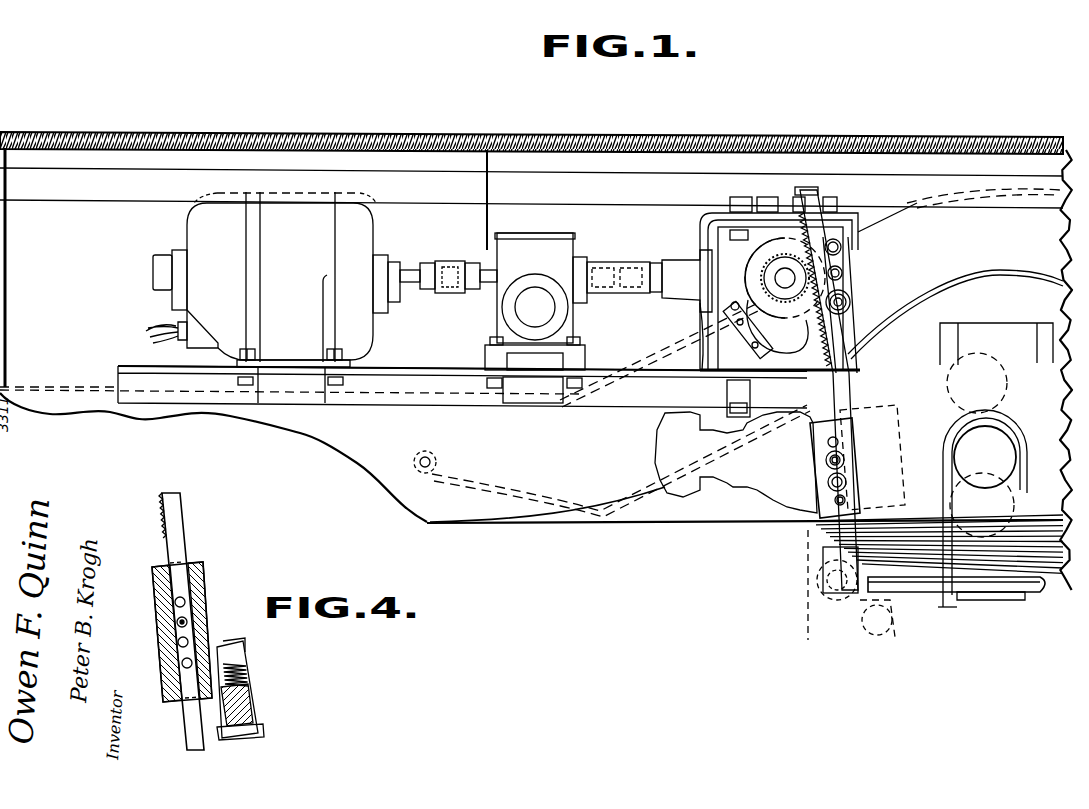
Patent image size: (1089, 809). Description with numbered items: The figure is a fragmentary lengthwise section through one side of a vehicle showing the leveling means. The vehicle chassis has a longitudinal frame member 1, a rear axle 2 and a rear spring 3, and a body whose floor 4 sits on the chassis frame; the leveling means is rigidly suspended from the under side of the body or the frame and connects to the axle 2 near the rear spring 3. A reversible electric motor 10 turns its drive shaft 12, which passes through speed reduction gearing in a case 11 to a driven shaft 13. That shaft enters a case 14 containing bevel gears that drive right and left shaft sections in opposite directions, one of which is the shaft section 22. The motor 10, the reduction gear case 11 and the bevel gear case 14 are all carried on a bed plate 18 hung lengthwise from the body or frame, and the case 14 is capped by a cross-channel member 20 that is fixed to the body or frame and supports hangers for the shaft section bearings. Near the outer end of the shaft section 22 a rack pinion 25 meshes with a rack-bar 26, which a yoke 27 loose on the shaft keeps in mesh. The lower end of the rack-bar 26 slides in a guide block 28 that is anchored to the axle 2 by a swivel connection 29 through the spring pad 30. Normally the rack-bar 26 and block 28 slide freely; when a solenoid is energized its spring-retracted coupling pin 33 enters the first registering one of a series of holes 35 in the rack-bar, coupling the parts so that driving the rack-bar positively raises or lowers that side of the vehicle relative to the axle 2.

In FIG. 1, the longitudinal frame member 1 is at (542, 524).
In FIG. 1, the rear axle 2 is at (1000, 443).
In FIG. 1, the rear spring 3 is at (1027, 593).
In FIG. 1, the floor 4 is at (670, 134).
In FIG. 1, the electric motor 10 is at (273, 297).
In FIG. 1, the case 11 is at (536, 318).
In FIG. 1, the drive shaft 12 is at (427, 240).
In FIG. 1, the driven shaft 13 is at (597, 270).
In FIG. 1, the case 14 is at (715, 283).
In FIG. 1, the bed plate 18 is at (418, 376).
In FIG. 1, the cross-channel member 20 is at (845, 210).
In FIG. 1, the driven shaft section 22 is at (772, 277).
In FIG. 1, the rack pinion 25 is at (766, 262).
In FIG. 1, the rack-bar 26 is at (852, 309).
In FIG. 4, the rack-bar 26 is at (177, 549).
In FIG. 1, the yoke 27 is at (838, 261).
In FIG. 1, the guide block 28 is at (853, 432).
In FIG. 4, the guide block 28 is at (210, 582).
In FIG. 4, the swivel connection 29 is at (255, 695).
In FIG. 1, the spring pad 30 is at (1043, 587).
In FIG. 1, the coupling pin 33 is at (862, 473).
In FIG. 4, the coupling pin 33 is at (178, 622).
In FIG. 1, the holes 35 is at (838, 451).
In FIG. 4, the holes 35 is at (187, 663).